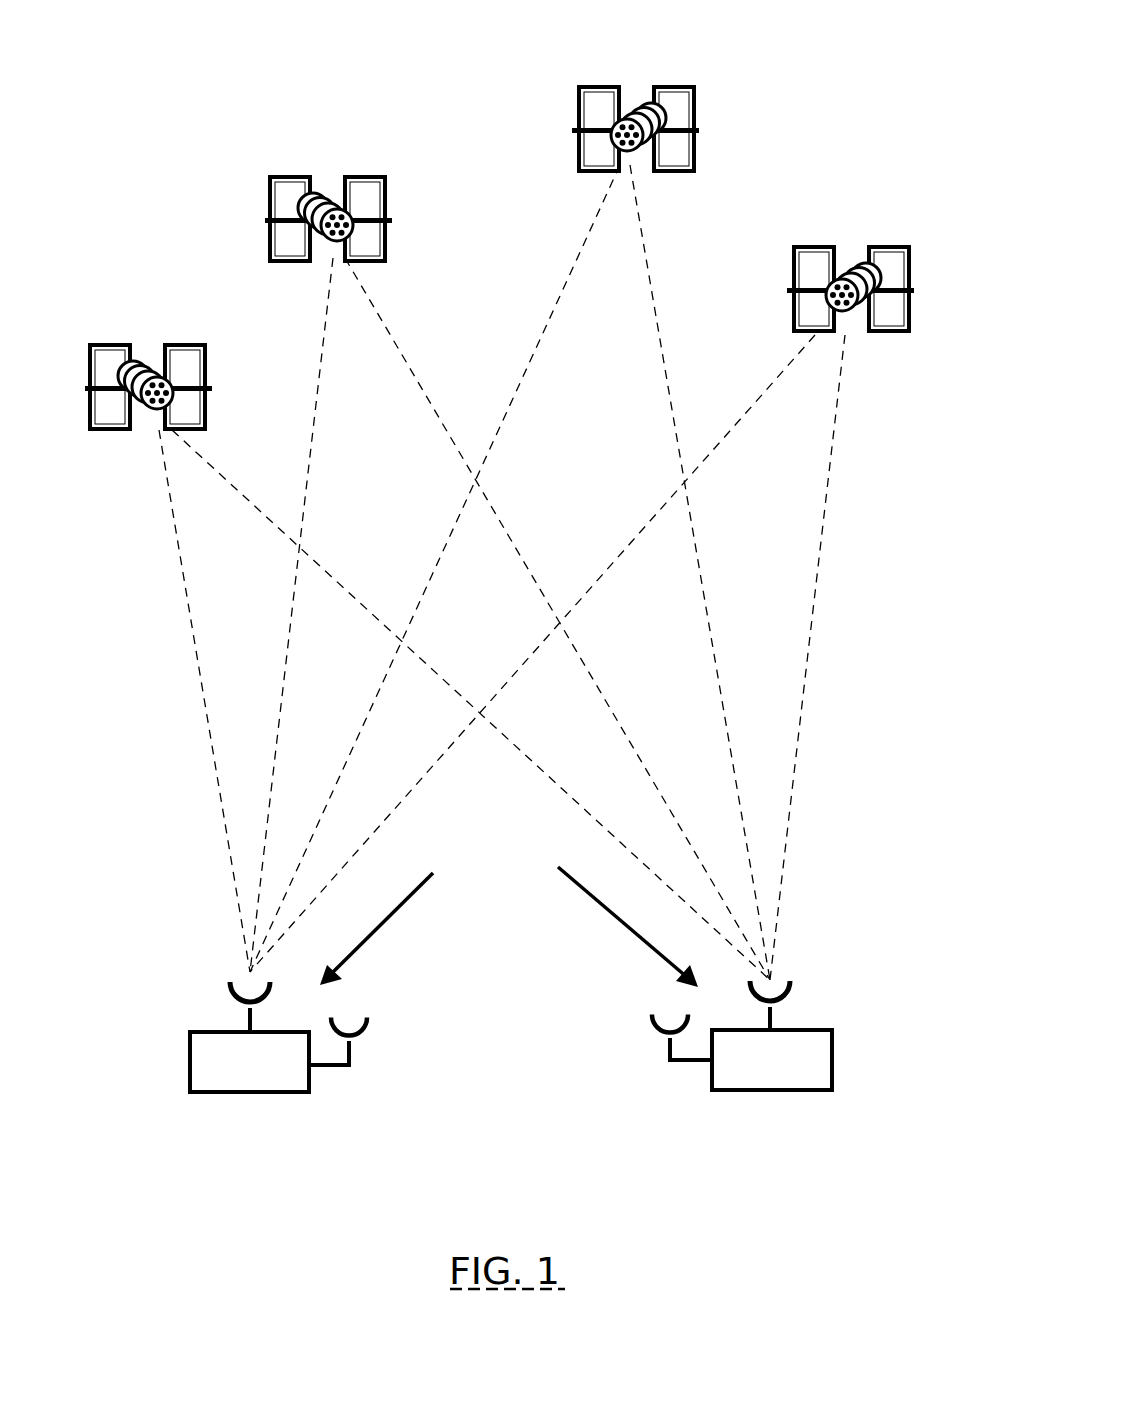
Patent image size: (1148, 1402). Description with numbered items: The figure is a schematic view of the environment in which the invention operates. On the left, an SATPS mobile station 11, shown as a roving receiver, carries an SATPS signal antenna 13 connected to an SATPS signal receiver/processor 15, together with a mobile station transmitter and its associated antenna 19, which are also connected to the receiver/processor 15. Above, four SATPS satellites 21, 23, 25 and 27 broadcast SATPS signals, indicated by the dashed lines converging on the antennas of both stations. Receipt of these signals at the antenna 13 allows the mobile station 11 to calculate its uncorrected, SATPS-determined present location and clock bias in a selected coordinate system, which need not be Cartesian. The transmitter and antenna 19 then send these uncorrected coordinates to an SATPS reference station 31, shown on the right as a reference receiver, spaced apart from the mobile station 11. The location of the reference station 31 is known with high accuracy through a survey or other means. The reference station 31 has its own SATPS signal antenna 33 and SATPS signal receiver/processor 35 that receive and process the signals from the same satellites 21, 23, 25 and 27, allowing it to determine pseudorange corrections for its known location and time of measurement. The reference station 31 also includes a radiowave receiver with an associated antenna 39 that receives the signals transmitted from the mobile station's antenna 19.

The SATPS mobile station 11 is at (397, 913).
The SATPS signal antenna 13 is at (250, 1026).
The SATPS signal receiver/processor 15 is at (210, 1071).
The antenna 19 is at (353, 1050).
The SATPS satellite 21 is at (154, 376).
The SATPS satellite 23 is at (334, 212).
The SATPS satellite 25 is at (636, 122).
The SATPS satellite 27 is at (850, 283).
The SATPS reference station 31 is at (619, 913).
The SATPS signal antenna 33 is at (773, 1017).
The SATPS signal receiver/processor 35 is at (818, 1066).
The antenna 39 is at (668, 1048).